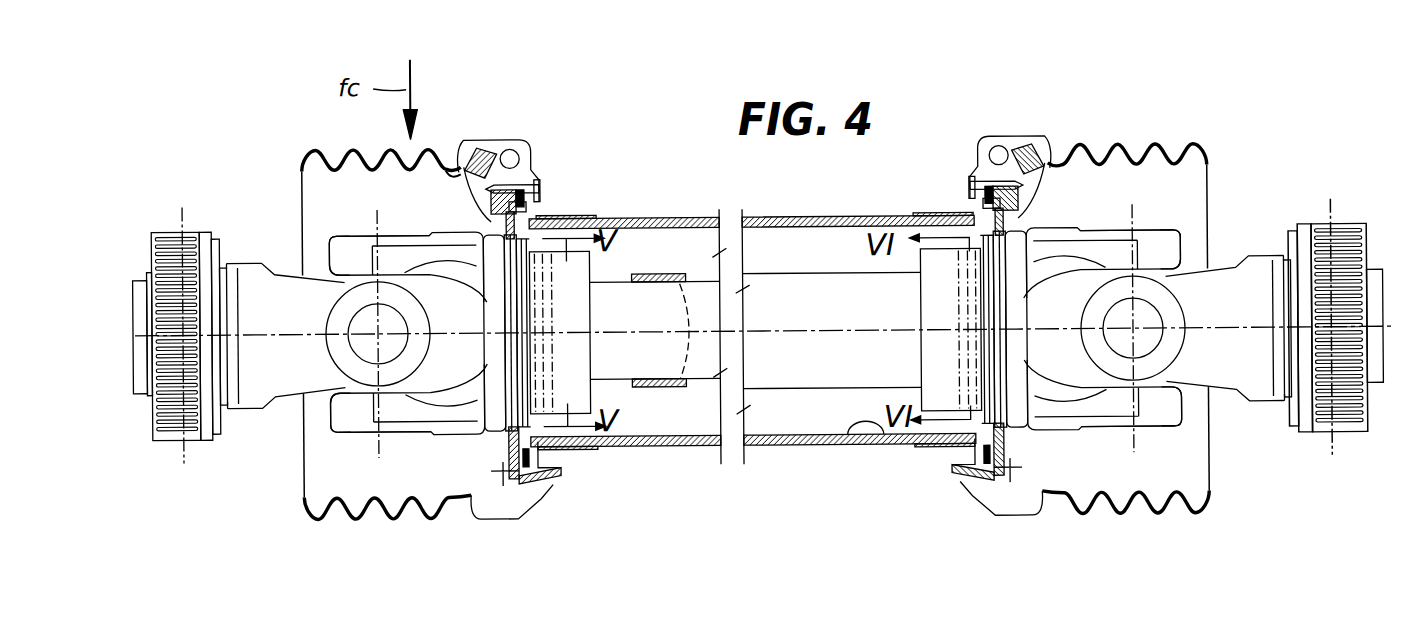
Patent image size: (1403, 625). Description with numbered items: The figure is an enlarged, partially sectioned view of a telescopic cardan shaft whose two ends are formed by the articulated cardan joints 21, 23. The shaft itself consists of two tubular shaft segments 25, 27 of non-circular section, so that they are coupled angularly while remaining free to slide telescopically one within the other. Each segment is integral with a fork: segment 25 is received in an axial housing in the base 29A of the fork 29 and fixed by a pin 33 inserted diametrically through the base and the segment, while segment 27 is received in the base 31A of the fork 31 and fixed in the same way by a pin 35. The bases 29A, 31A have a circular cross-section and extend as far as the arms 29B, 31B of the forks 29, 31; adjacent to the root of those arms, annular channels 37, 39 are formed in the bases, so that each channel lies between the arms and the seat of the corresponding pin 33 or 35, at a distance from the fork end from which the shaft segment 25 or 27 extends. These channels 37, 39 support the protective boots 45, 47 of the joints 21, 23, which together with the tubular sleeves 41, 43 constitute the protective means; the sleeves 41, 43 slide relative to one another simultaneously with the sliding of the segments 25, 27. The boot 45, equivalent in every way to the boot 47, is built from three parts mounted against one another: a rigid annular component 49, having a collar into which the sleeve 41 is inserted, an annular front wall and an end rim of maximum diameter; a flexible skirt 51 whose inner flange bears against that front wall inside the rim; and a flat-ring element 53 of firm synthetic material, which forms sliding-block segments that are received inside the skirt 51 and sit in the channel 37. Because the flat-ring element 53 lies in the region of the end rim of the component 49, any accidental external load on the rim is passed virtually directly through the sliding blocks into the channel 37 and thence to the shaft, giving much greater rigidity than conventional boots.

The cardan joint 21 is at (329, 428).
The cardan joint 23 is at (1187, 401).
The tubular shaft segment 25 is at (660, 362).
The tubular shaft segment 27 is at (807, 366).
The fork 29 is at (452, 436).
The base of the fork 29A is at (495, 248).
The arms of the fork 29B is at (342, 247).
The fork 31 is at (1110, 445).
The base of the fork 31A is at (1018, 237).
The arms of the fork 31B is at (1175, 426).
The pin 33 is at (545, 303).
The pin 35 is at (960, 356).
The annular channel 37 is at (512, 358).
The annular channel 39 is at (1000, 292).
The tubular sleeve 41 is at (632, 216).
The tubular sleeve 43 is at (882, 436).
The protective boot 45 is at (462, 121).
The protective boot 47 is at (1135, 136).
The rigid annular component 49 is at (534, 516).
The flexible skirt 51 is at (325, 147).
The flat-ring element 53 is at (455, 160).